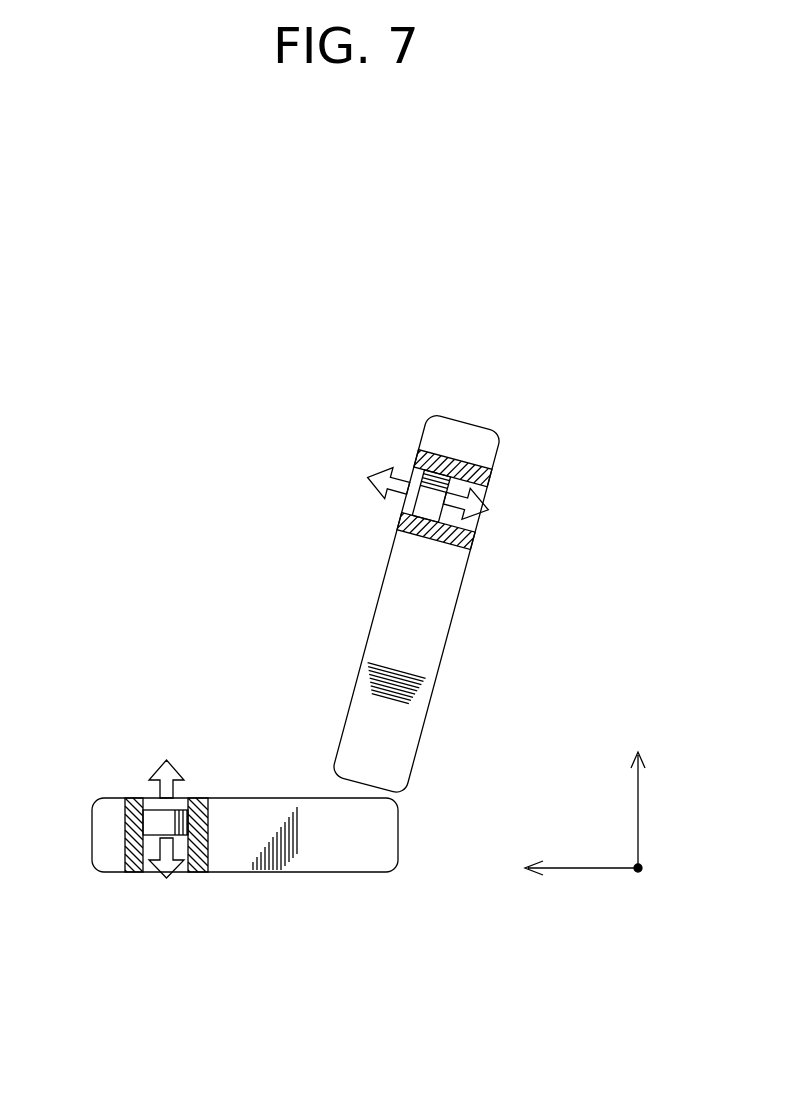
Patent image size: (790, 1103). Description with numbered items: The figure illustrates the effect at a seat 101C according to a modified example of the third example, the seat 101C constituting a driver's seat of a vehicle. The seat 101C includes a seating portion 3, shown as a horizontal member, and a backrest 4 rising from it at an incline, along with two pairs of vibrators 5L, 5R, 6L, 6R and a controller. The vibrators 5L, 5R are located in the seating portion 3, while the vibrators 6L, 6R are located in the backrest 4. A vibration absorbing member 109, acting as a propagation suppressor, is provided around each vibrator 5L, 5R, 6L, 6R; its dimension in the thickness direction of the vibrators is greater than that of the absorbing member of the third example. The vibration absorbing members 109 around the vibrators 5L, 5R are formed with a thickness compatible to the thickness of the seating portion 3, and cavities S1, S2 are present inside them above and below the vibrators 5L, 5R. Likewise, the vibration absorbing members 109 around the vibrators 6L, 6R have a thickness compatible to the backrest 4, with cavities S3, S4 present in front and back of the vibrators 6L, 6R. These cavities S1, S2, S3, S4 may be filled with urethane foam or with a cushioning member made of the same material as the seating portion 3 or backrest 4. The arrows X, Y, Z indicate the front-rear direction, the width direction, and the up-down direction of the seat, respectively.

The seat 101C is at (660, 418).
The seating portion 3 is at (351, 857).
The backrest 4 is at (443, 647).
The vibrator 5L is at (130, 865).
The vibrator 5R is at (123, 873).
The vibrator 6L is at (405, 481).
The vibrator 6R is at (415, 462).
The vibration absorbing member 109 is at (198, 800).
The cavity S1 is at (156, 807).
The cavity S2 is at (152, 852).
The cavity S3 is at (405, 504).
The cavity S4 is at (462, 522).
The arrow X is at (577, 870).
The arrow Y is at (640, 871).
The arrow Z is at (639, 812).